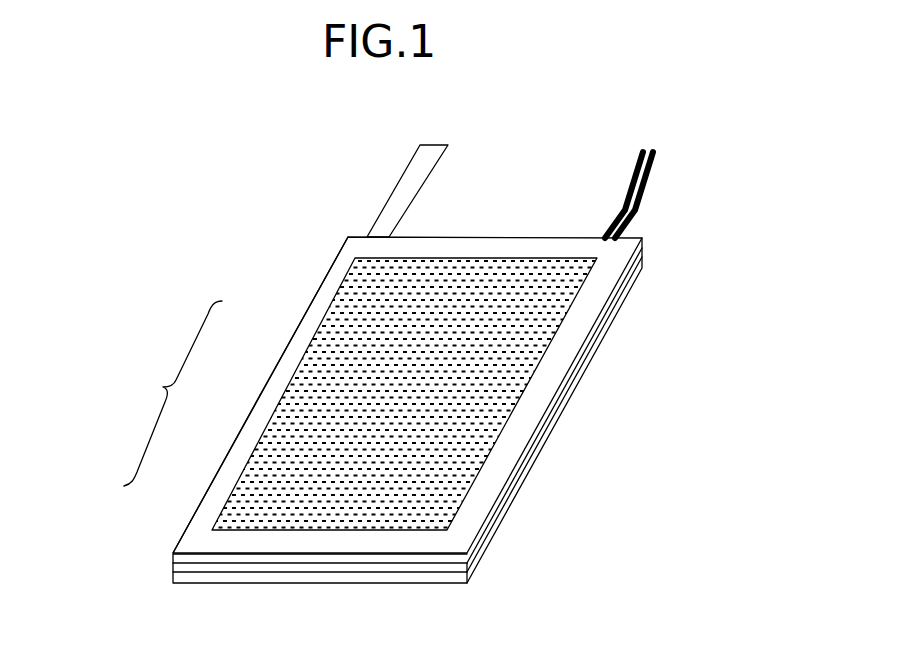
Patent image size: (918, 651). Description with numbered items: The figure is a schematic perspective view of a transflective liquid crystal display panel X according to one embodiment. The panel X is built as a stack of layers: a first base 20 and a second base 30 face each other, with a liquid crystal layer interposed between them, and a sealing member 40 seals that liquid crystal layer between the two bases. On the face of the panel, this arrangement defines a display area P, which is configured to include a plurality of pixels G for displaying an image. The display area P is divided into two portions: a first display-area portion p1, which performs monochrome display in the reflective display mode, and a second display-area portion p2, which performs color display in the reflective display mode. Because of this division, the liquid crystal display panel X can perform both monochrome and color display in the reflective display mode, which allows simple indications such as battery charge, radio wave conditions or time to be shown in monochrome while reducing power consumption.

The transflective liquid crystal display panel X is at (490, 202).
The pixels G is at (517, 404).
The first base 20 is at (187, 581).
The second base 30 is at (185, 561).
The sealing member 40 is at (458, 565).
The display area P is at (173, 393).
The first display-area portion p1 is at (227, 498).
The second display-area portion p2 is at (292, 357).